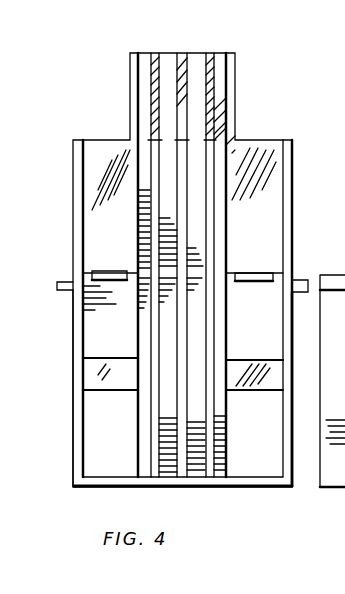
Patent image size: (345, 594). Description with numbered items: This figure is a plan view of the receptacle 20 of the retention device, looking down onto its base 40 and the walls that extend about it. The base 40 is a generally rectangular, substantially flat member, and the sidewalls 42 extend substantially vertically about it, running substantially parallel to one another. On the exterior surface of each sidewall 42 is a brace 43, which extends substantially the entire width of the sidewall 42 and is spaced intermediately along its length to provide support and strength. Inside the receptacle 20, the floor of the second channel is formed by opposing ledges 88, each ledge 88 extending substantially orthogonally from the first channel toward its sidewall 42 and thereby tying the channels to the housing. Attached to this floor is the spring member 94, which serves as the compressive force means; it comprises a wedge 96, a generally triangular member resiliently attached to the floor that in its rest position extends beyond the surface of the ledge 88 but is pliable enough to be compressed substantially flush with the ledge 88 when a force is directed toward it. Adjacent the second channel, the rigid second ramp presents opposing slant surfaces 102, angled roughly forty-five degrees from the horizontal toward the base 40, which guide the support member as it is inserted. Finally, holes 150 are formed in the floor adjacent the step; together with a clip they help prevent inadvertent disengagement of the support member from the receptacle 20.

The receptacle 20 is at (106, 88).
The base 40 is at (200, 95).
The sidewall 42 is at (74, 381).
The brace 43 is at (298, 280).
The ledge 88 is at (119, 341).
The spring member 94 is at (296, 384).
The wedge 96 is at (125, 392).
The slant surface 102 is at (273, 236).
The hole 150 is at (113, 272).